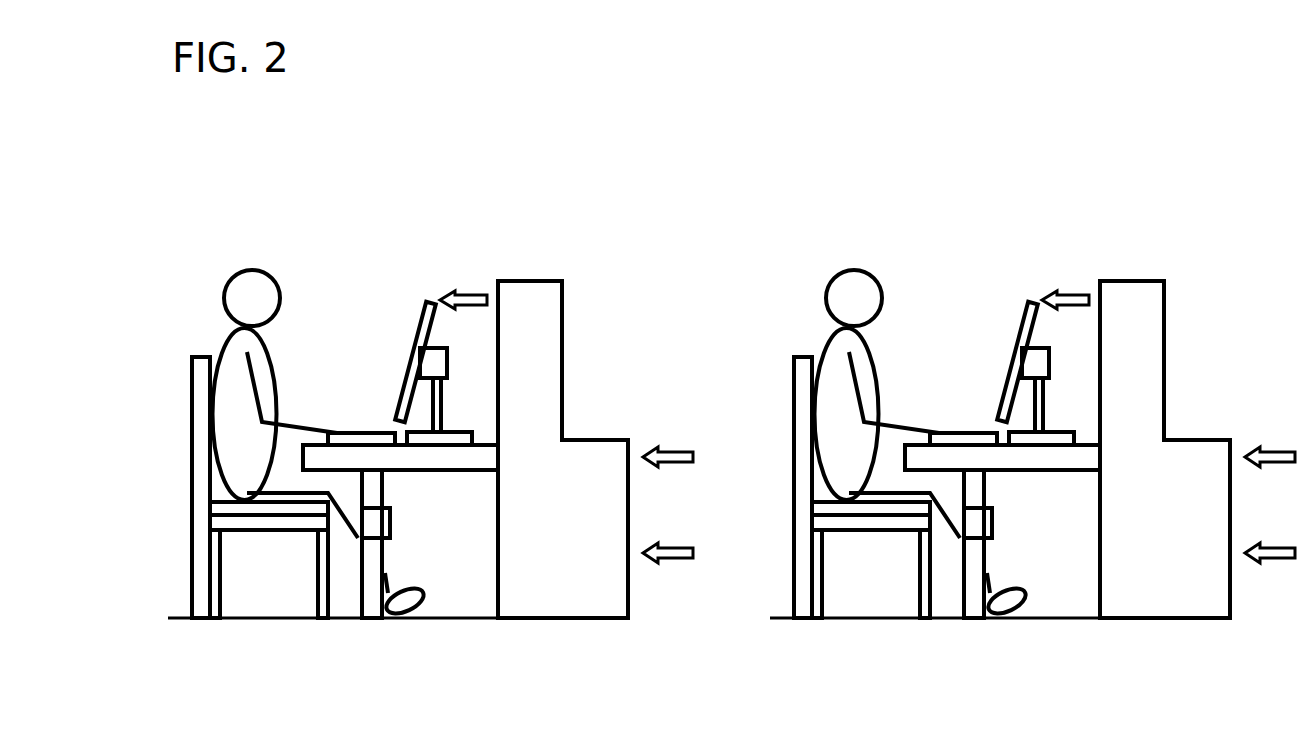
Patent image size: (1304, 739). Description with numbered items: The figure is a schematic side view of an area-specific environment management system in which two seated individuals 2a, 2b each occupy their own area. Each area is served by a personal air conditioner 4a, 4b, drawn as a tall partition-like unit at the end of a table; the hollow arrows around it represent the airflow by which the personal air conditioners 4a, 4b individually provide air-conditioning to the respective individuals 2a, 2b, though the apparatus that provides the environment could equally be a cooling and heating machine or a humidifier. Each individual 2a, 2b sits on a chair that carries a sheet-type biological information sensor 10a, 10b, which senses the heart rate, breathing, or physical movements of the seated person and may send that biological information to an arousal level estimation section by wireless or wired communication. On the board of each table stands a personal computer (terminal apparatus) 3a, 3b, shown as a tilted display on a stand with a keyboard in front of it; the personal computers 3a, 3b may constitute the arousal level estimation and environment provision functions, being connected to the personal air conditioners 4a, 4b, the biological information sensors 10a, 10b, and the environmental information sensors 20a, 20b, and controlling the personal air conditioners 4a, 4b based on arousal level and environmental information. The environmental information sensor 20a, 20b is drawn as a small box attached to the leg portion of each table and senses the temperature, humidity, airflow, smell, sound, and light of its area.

The individual 2a is at (224, 350).
The individual 2b is at (898, 444).
The personal computer (terminal apparatus) 3a is at (431, 302).
The personal computer (terminal apparatus) 3b is at (1041, 345).
The personal air conditioner 4a is at (566, 350).
The personal air conditioner 4b is at (1165, 449).
The biological information sensor 10a is at (209, 510).
The biological information sensor 10b is at (837, 487).
The environmental information sensor 20a is at (395, 527).
The environmental information sensor 20b is at (1009, 504).